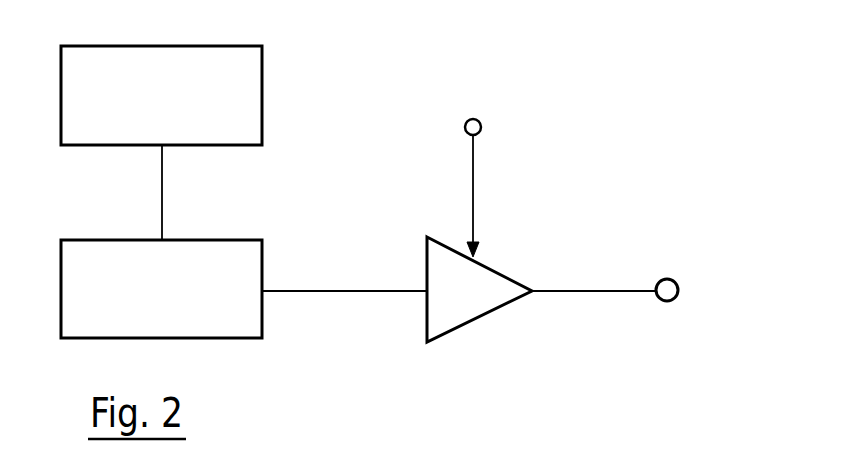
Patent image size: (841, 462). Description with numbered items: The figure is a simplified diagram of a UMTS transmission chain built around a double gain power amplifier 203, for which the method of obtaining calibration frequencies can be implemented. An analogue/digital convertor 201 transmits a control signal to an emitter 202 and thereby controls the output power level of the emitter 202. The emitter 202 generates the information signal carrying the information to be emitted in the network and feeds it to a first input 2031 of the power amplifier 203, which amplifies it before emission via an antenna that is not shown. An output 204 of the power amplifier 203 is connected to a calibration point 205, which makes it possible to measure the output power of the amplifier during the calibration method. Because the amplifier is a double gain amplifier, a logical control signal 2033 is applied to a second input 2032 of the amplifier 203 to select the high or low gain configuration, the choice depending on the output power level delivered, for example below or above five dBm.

The analogue/digital convertor 201 is at (262, 95).
The emitter 202 is at (237, 239).
The power amplifier 203 is at (468, 322).
The first input 2031 is at (427, 297).
The second input 2032 is at (475, 255).
The control signal 2033 is at (480, 118).
The output 204 is at (605, 291).
The calibration point 205 is at (667, 302).